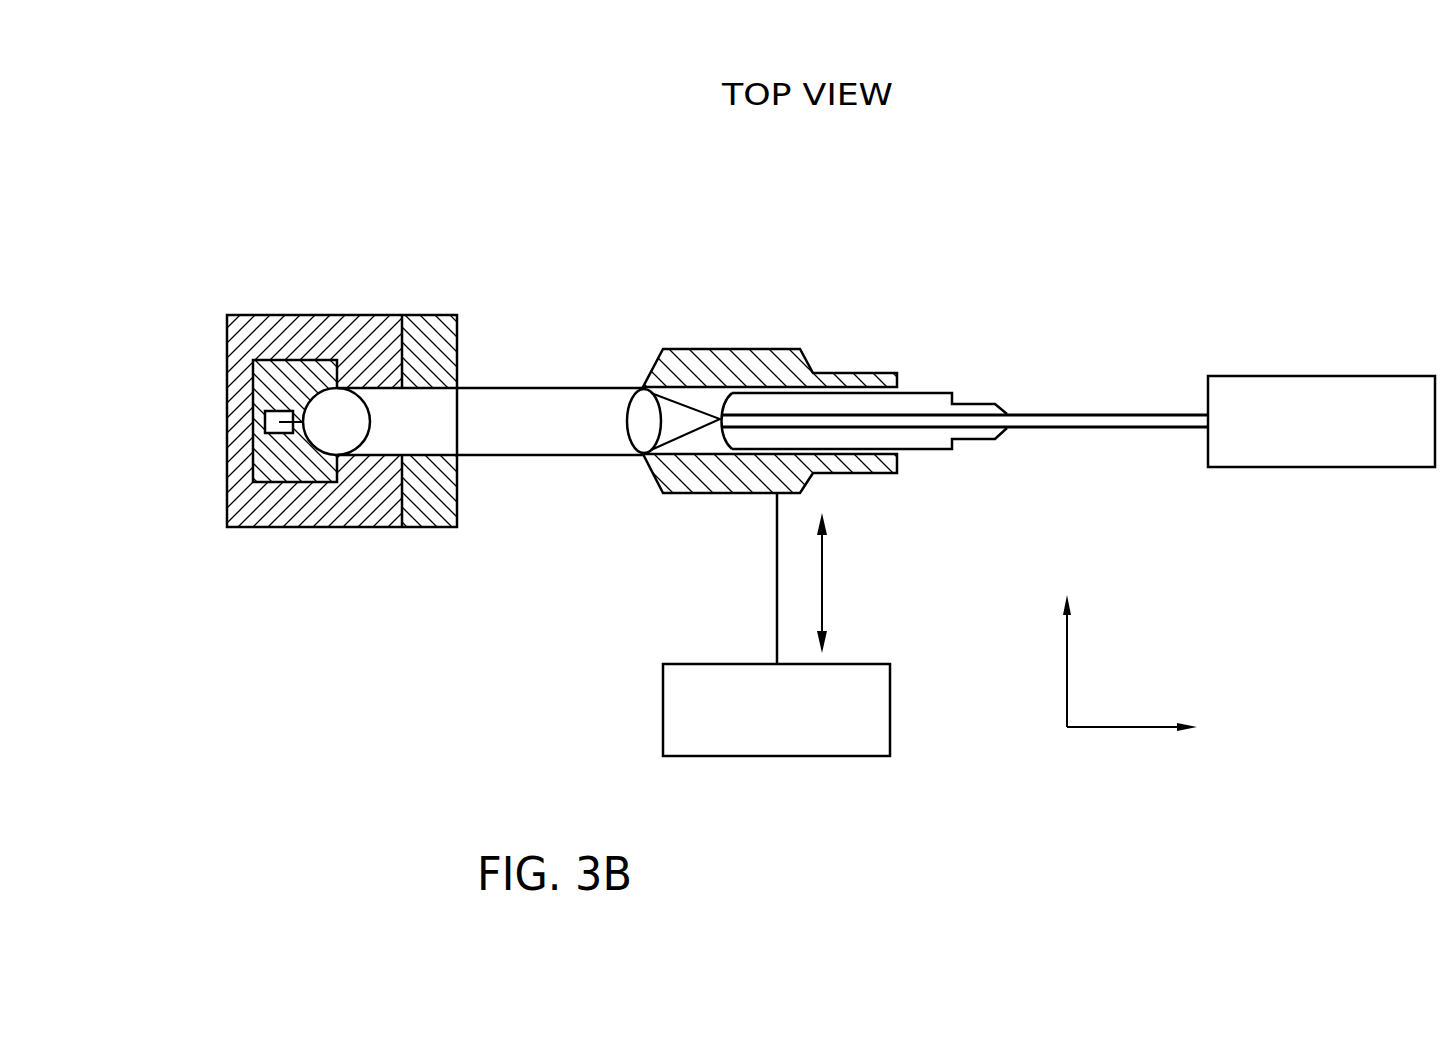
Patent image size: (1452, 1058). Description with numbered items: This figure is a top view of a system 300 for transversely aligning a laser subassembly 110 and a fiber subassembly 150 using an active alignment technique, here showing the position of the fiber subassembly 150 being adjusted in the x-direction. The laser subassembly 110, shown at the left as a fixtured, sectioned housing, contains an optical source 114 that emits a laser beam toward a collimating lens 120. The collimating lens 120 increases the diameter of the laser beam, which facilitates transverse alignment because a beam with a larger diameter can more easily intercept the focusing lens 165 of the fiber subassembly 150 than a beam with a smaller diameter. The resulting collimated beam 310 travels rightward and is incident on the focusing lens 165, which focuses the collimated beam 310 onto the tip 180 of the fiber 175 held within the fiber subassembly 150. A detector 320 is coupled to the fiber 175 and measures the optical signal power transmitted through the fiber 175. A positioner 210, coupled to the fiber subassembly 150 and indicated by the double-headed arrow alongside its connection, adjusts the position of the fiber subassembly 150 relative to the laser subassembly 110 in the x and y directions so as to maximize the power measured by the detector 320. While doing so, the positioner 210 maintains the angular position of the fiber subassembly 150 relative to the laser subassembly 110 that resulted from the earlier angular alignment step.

The laser subassembly 110 is at (232, 262).
The optical source 114 is at (253, 450).
The collimating lens 120 is at (362, 445).
The collimated beam 310 is at (550, 387).
The fiber subassembly 150 is at (848, 322).
The focusing lens 165 is at (626, 432).
The tip 180 is at (716, 426).
The fiber 175 is at (1083, 414).
The system 300 is at (1093, 205).
The detector 320 is at (1318, 467).
The positioner 210 is at (776, 756).